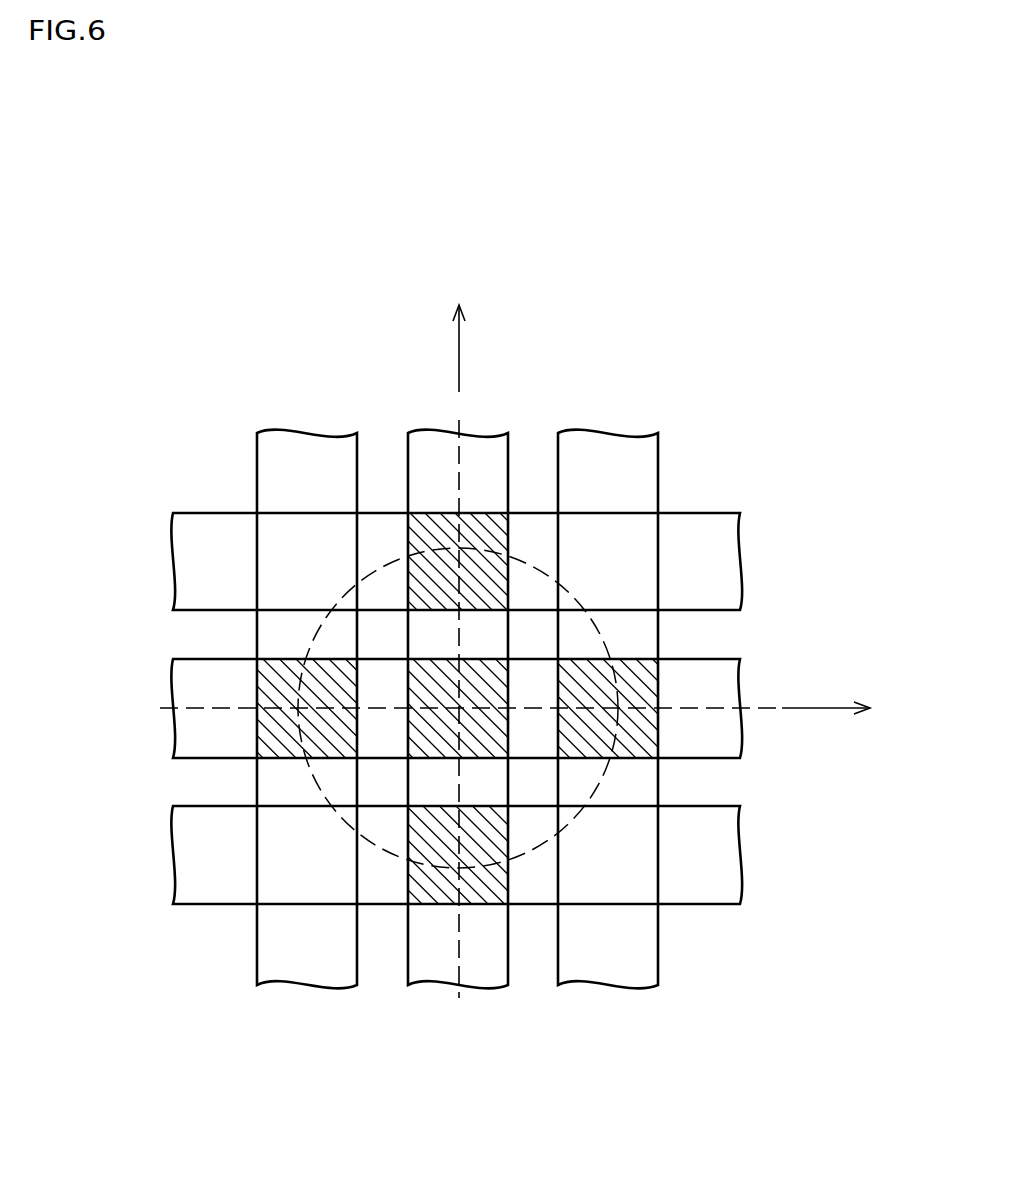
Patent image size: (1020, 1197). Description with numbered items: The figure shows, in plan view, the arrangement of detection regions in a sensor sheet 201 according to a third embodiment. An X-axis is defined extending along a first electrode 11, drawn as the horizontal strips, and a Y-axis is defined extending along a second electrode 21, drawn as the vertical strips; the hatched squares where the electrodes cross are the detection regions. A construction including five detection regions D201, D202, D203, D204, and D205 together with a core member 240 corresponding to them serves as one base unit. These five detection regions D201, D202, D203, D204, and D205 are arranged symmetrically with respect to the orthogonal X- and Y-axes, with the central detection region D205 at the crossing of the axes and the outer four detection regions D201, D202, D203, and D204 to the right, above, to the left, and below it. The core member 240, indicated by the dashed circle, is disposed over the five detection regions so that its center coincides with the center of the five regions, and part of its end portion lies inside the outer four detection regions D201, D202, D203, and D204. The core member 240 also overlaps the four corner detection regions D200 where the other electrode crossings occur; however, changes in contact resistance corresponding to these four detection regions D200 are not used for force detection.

The sensor sheet 201 is at (773, 403).
The first electrode 11 is at (713, 543).
The second electrode 21 is at (627, 961).
The core member 240 is at (383, 597).
The detection region D200 is at (278, 533).
The detection region D201 is at (638, 738).
The detection region D202 is at (488, 523).
The detection region D203 is at (277, 679).
The detection region D204 is at (428, 885).
The detection region D205 is at (430, 737).